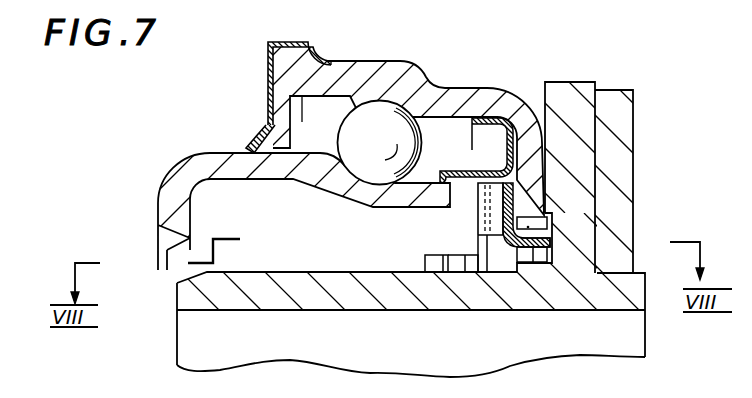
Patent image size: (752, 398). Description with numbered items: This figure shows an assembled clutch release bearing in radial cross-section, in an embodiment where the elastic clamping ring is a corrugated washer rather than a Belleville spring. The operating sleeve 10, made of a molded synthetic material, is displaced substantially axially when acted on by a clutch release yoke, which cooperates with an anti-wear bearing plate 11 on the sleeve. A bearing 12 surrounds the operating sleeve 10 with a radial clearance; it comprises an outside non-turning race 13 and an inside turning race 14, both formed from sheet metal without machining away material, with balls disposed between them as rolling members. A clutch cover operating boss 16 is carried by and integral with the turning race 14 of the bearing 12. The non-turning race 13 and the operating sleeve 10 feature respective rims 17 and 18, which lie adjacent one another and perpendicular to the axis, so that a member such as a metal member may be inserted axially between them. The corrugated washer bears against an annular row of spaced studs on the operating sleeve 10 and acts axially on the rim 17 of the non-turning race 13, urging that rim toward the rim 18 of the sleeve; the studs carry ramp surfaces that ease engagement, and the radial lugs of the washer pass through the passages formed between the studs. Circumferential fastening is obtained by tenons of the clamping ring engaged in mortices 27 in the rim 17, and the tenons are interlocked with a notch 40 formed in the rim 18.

The operating sleeve 10 is at (278, 300).
The anti-wear bearing plate 11 is at (610, 88).
The bearing 12 is at (246, 103).
The outside non-turning race 13 is at (457, 86).
The inside turning race 14 is at (382, 200).
The clutch cover operating boss 16 is at (172, 173).
The rim 17 is at (506, 154).
The rim 18 is at (571, 80).
The mortices 27 is at (532, 226).
The notch 40 is at (547, 229).